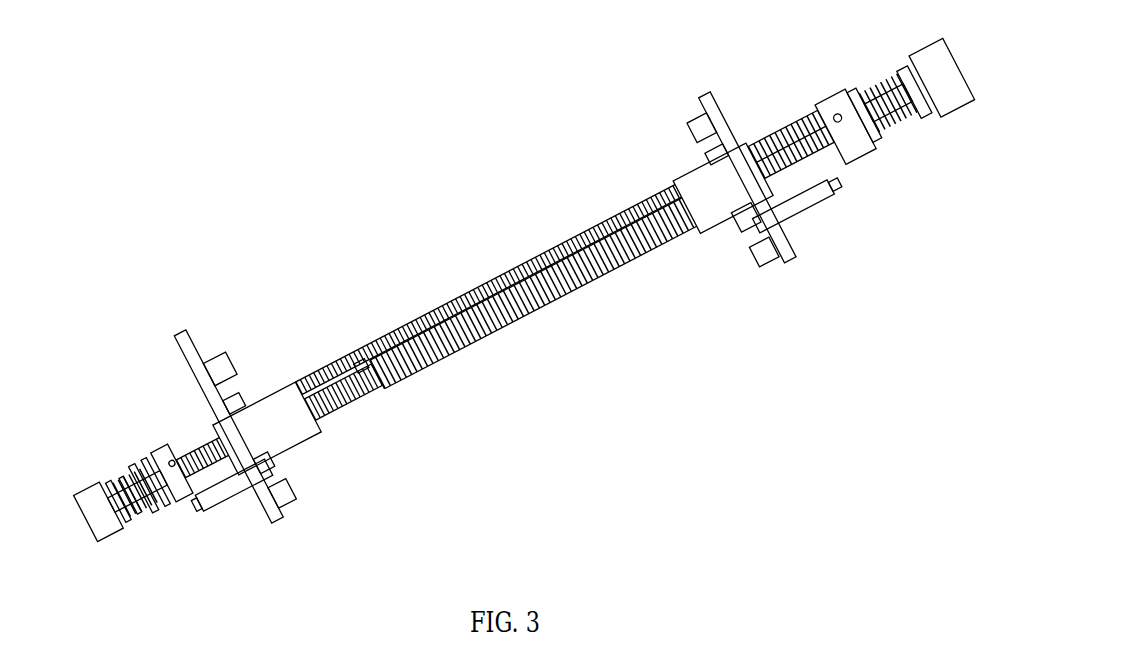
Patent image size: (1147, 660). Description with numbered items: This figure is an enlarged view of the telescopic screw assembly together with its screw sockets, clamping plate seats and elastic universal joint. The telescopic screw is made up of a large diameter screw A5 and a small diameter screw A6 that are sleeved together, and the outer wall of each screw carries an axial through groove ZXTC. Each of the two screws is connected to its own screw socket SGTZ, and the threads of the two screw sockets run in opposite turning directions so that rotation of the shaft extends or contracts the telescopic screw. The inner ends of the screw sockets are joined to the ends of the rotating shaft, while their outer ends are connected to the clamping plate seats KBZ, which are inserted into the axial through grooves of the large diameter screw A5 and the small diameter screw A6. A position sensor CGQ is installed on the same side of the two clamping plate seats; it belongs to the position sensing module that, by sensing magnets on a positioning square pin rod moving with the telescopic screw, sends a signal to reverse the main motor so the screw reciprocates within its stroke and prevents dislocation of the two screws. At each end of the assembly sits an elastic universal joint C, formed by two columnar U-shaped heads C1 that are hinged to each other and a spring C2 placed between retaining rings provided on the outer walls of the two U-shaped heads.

The elastic universal joint C is at (155, 471).
The columnar U-shaped head C1 is at (829, 104).
The spring C2 is at (909, 88).
The large diameter screw A5 is at (567, 267).
The small diameter screw A6 is at (481, 290).
The axial through groove ZXTC is at (352, 316).
The screw socket SGTZ is at (492, 297).
The clamping plate seat KBZ is at (485, 305).
The position sensor CGQ is at (533, 369).